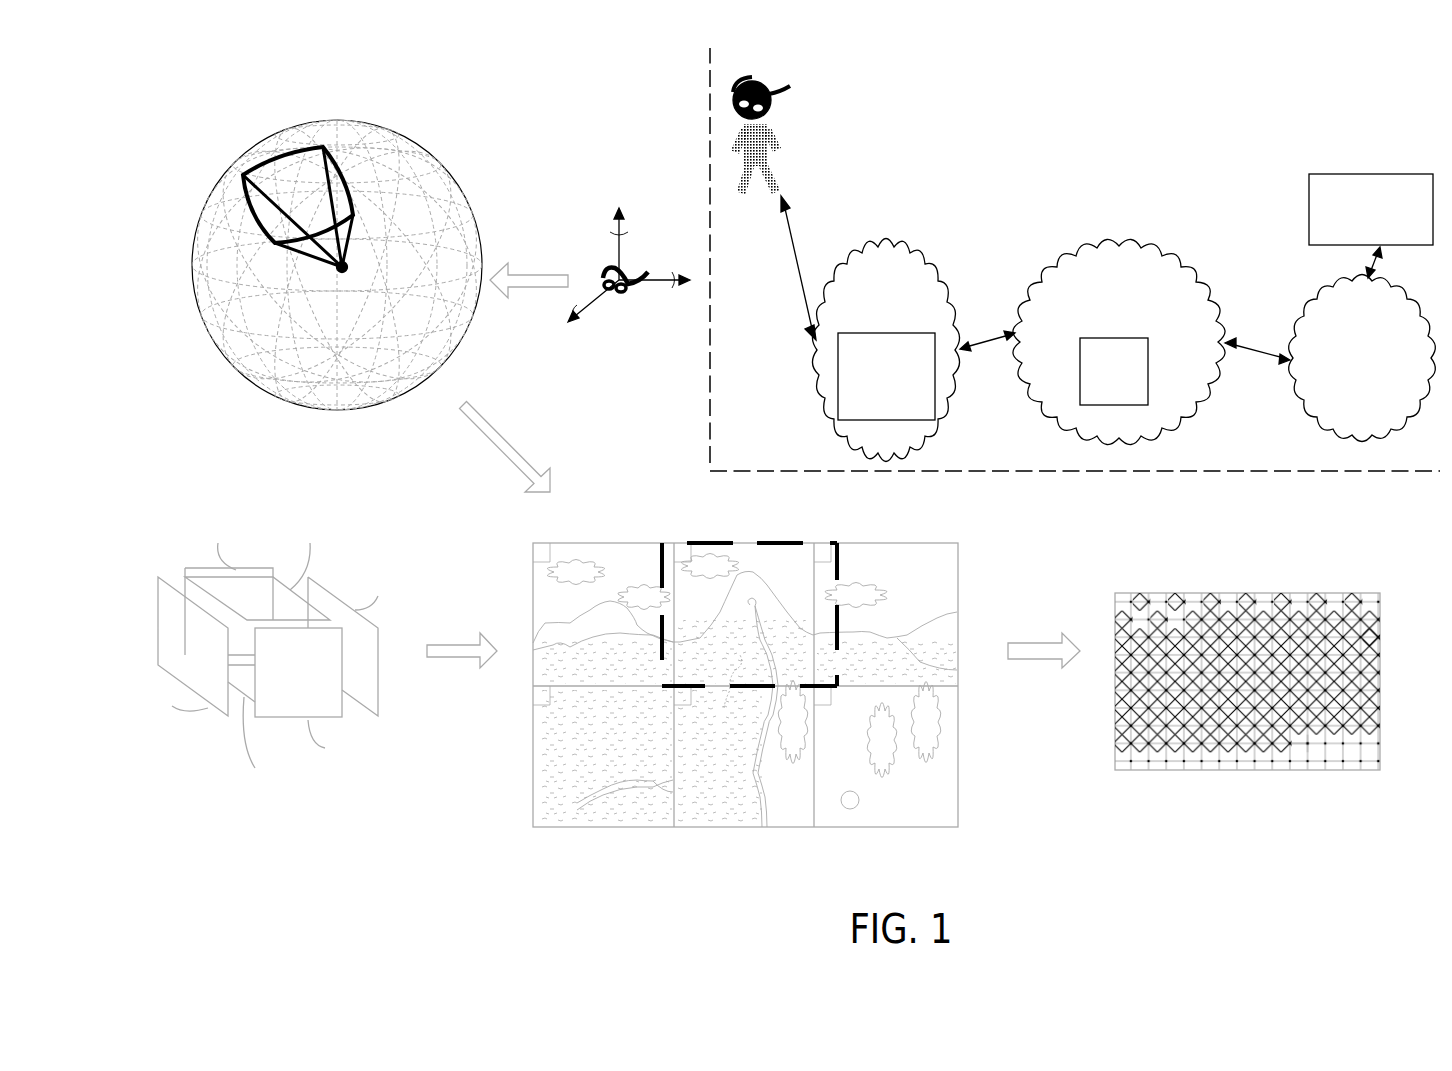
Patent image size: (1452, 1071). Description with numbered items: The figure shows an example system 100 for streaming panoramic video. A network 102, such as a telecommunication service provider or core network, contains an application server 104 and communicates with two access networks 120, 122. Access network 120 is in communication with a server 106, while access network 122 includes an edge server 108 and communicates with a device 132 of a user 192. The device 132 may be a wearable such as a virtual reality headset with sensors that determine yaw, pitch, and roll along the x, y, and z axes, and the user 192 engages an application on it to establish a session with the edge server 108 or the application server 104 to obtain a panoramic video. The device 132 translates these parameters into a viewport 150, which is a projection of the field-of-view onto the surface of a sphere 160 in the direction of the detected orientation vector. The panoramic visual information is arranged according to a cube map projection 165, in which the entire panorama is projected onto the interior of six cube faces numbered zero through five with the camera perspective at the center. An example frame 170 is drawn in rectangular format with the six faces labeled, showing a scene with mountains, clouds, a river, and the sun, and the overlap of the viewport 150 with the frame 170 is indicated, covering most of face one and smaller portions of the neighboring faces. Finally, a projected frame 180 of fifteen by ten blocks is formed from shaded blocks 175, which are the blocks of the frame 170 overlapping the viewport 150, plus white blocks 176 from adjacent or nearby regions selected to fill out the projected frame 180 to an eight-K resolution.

The system 100 is at (1138, 141).
The network 102 is at (1101, 322).
The application server 104 is at (1132, 394).
The server 106 is at (1353, 229).
The edge server 108 is at (868, 406).
The access network 120 is at (1344, 387).
The access network 122 is at (868, 320).
The device 132 is at (642, 273).
The viewport 150 is at (290, 147).
The sphere 160 is at (393, 130).
The cube map projection 165 is at (262, 826).
The frame 170 is at (720, 868).
The shaded blocks 175 is at (1368, 633).
The white blocks 176 is at (1318, 762).
The projected frame 180 is at (1239, 816).
The user 192 is at (778, 197).